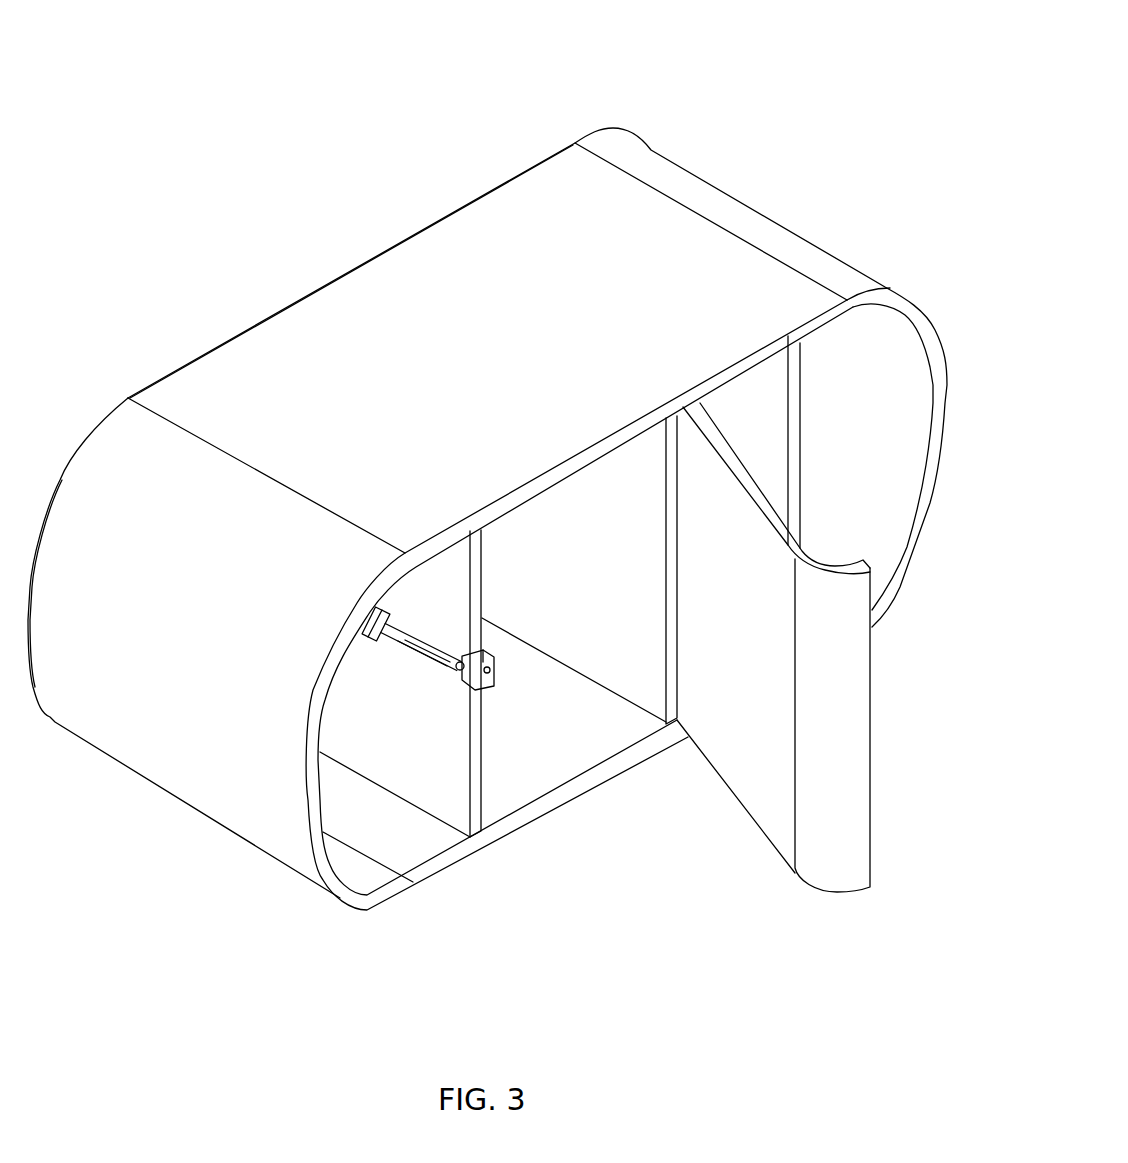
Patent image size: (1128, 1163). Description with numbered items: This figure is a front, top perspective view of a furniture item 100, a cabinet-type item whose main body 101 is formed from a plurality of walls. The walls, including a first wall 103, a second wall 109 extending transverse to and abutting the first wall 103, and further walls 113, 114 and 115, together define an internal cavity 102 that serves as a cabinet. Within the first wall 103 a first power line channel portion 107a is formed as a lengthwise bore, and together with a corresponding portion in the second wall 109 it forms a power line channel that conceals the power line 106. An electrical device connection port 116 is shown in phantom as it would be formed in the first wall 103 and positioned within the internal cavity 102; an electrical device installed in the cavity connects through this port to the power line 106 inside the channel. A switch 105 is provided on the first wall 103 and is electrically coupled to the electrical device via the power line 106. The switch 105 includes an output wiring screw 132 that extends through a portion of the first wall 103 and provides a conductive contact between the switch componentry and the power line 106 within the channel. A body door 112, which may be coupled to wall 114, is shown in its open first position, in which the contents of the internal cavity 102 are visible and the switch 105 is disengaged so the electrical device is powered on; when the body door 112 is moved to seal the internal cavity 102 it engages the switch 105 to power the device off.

The furniture item 100 is at (708, 112).
The main body 101 is at (458, 290).
The internal cavity 102 is at (561, 573).
The first wall 103 is at (424, 765).
The switch 105 is at (490, 680).
The power line 106 is at (408, 637).
The first power line channel portion 107a is at (417, 647).
The second wall 109 is at (259, 313).
The body door 112 is at (743, 717).
The wall 113 is at (660, 331).
The wall 114 is at (645, 523).
The wall 115 is at (602, 731).
The electrical device connection port 116 is at (370, 637).
The output wiring screw 132 is at (467, 664).